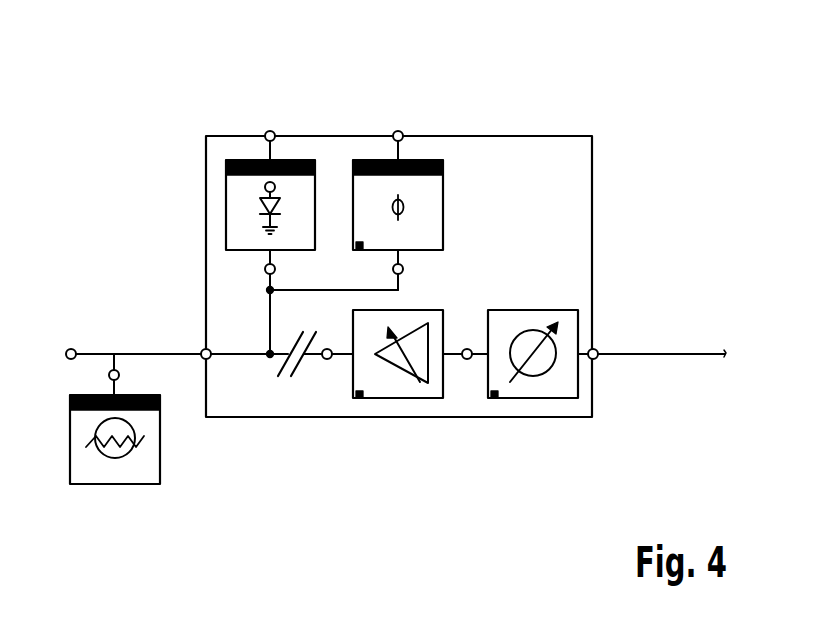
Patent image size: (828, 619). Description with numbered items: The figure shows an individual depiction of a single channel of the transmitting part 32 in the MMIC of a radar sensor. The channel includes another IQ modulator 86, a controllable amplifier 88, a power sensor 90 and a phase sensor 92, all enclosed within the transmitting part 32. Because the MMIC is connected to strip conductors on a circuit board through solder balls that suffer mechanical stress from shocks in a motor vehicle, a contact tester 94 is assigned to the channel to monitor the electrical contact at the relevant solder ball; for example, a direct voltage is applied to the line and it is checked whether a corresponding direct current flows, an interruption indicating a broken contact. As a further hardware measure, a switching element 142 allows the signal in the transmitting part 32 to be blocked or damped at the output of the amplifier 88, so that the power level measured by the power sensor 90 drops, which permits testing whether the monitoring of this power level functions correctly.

The transmitting part 32 is at (462, 101).
The IQ modulator 86 is at (535, 398).
The controllable amplifier 88 is at (400, 398).
The power sensor 90 is at (250, 160).
The phase sensor 92 is at (378, 160).
The contact tester 94 is at (115, 484).
The switching element 142 is at (300, 365).